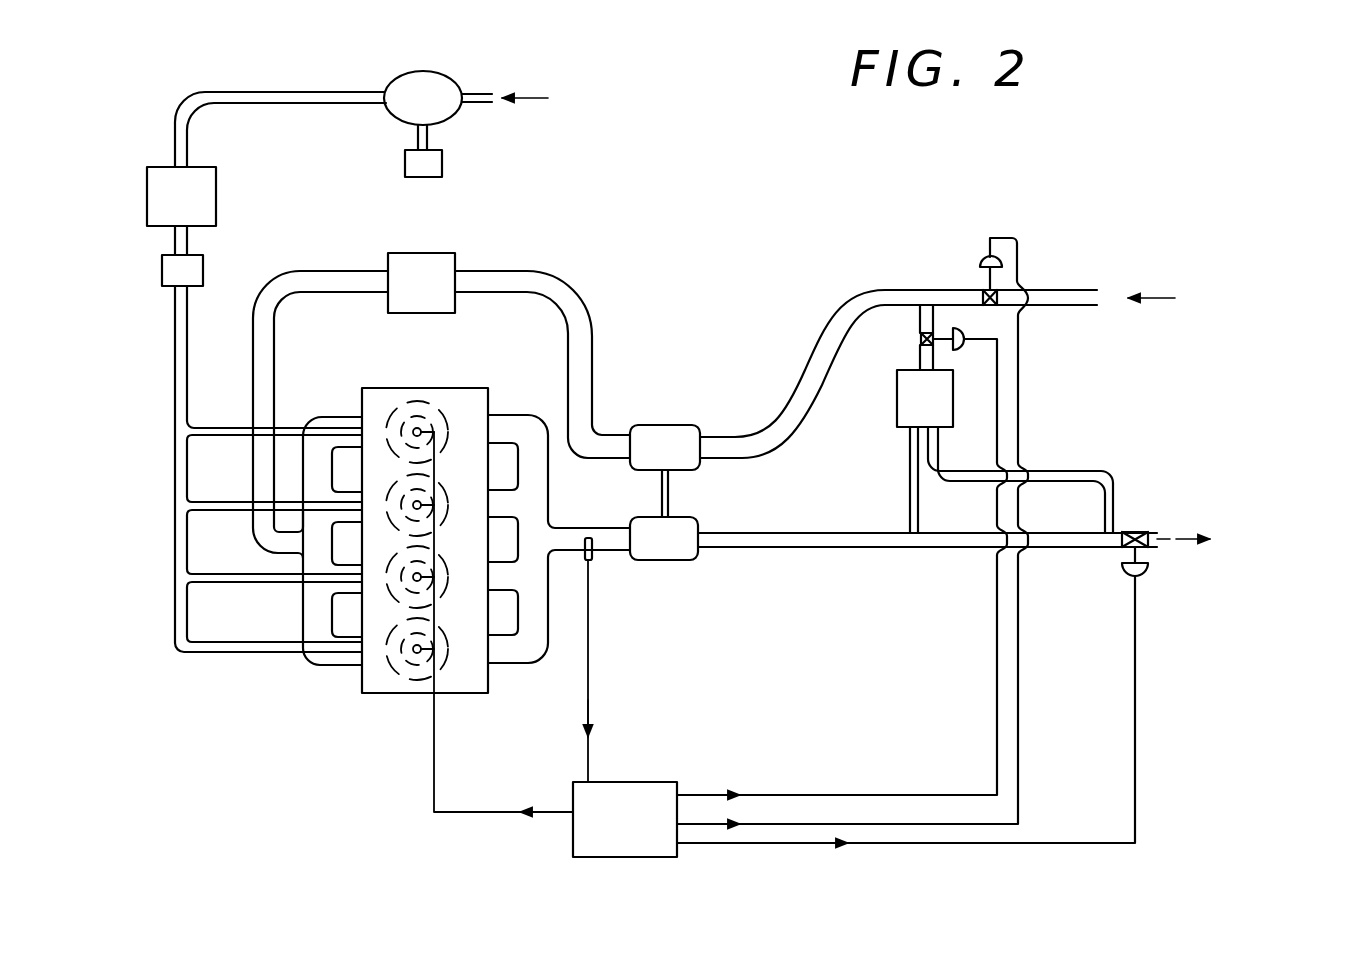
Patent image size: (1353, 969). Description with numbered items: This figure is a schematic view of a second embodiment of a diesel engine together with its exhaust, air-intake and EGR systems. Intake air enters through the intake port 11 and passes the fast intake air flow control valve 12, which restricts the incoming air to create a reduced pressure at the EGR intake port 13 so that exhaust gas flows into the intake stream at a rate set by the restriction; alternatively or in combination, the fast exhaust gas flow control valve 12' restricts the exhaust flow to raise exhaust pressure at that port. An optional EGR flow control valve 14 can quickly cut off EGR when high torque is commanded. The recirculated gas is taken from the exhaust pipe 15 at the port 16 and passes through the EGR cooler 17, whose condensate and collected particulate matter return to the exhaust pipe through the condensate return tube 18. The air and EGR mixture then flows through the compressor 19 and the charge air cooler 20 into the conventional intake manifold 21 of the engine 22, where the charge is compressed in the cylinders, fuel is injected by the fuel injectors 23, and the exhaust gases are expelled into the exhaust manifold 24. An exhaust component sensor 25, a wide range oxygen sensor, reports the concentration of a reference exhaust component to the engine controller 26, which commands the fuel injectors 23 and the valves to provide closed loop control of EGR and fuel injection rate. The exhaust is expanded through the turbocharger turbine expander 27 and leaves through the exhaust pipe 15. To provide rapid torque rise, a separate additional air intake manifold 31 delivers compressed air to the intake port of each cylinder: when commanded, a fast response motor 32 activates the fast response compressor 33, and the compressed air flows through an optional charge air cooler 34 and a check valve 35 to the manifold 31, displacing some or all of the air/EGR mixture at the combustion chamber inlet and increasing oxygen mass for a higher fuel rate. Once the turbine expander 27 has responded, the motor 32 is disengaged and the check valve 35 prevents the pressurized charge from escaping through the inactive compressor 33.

The intake port 11 is at (1098, 298).
The fast intake air flow control valve 12 is at (852, 520).
The fast exhaust gas flow control valve 12' is at (953, 703).
The EGR intake port 13 is at (927, 318).
The EGR flow control valve 14 is at (960, 352).
The exhaust pipe 15 is at (1060, 553).
The port 16 is at (1110, 530).
The EGR cooler 17 is at (907, 397).
The condensate return tube 18 is at (908, 505).
The compressor 19 is at (670, 425).
The charge air cooler 20 is at (418, 263).
The intake manifold 21 is at (333, 420).
The engine 22 is at (402, 688).
The fuel injectors 23 is at (418, 427).
The exhaust manifold 24 is at (530, 428).
The exhaust component sensor 25 is at (590, 563).
The engine controller 26 is at (617, 788).
The turbocharger turbine expander 27 is at (665, 557).
The additional air intake manifold 31 is at (176, 578).
The fast response motor 32 is at (443, 158).
The fast response compressor 33 is at (424, 88).
The charge air cooler 34 is at (212, 188).
The check valve 35 is at (203, 269).